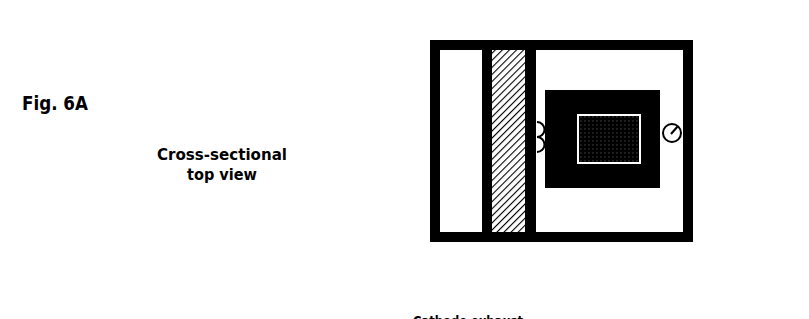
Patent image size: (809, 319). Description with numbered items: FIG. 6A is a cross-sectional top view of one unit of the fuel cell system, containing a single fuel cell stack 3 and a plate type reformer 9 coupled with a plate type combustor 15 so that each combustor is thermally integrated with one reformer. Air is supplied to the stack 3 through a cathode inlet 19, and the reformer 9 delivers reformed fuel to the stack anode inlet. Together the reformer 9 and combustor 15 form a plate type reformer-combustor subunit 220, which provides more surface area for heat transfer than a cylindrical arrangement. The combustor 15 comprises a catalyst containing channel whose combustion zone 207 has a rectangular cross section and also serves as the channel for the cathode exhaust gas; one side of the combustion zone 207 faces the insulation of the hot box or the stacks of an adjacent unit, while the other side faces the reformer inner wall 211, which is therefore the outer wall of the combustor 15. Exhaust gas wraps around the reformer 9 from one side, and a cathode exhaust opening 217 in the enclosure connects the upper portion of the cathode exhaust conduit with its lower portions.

The combustor 15 is at (474, 176).
The reformer 9 is at (516, 176).
The fuel cell stack 3 is at (619, 152).
The cathode exhaust opening 217 is at (548, 128).
The cathode inlet 19 is at (693, 122).
The combustion zone 207 is at (461, 213).
The inner wall 211 is at (498, 229).
The plate type reformer-combustor subunit 220 is at (570, 188).